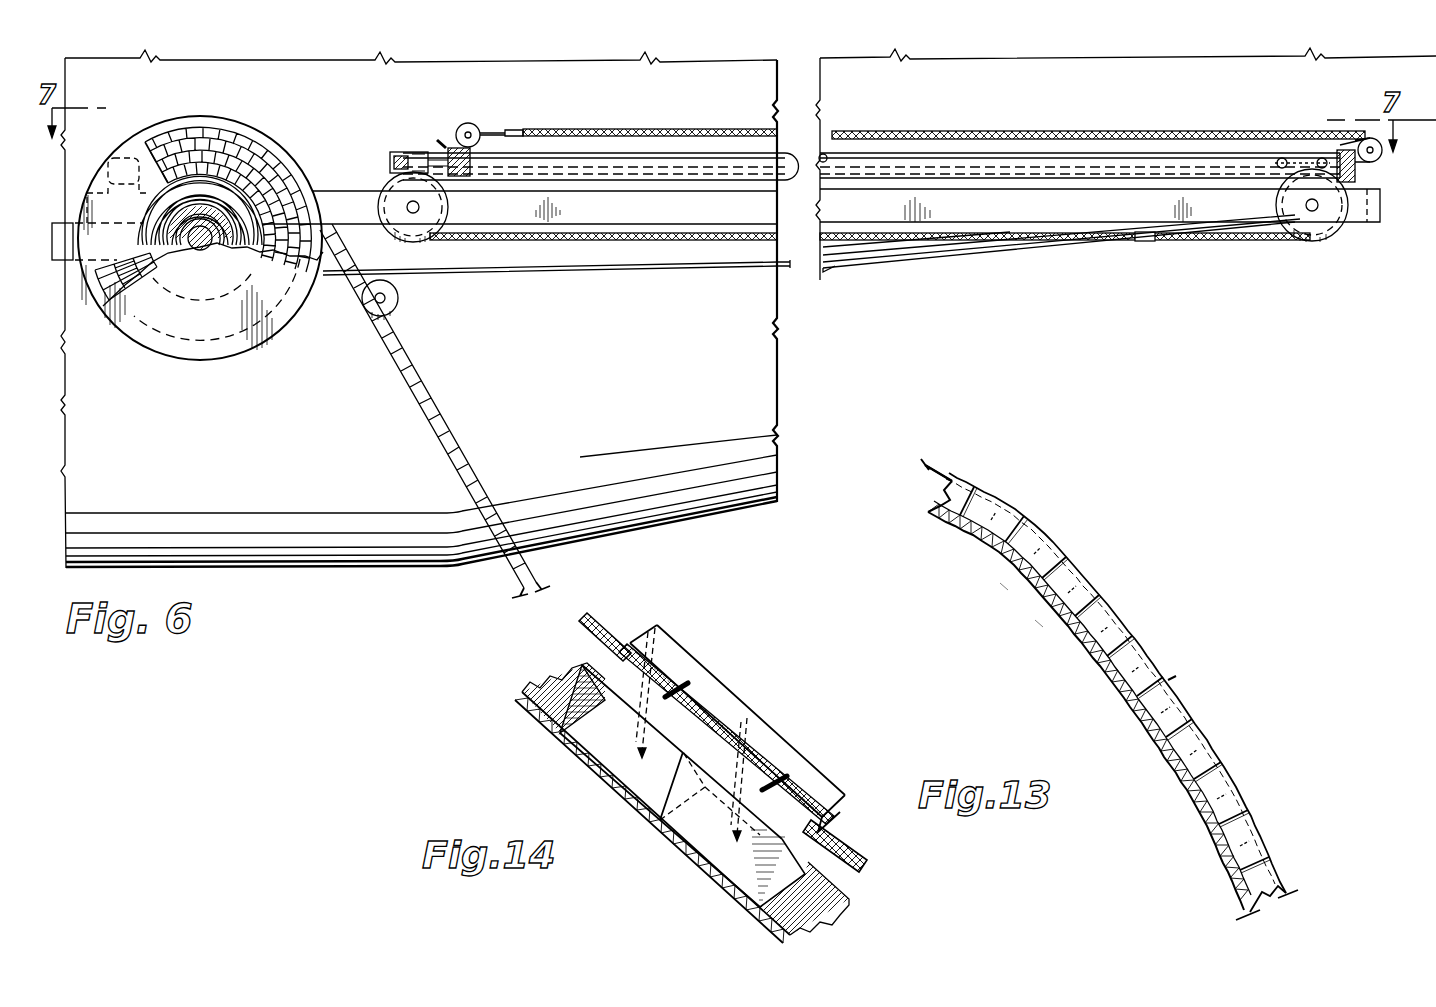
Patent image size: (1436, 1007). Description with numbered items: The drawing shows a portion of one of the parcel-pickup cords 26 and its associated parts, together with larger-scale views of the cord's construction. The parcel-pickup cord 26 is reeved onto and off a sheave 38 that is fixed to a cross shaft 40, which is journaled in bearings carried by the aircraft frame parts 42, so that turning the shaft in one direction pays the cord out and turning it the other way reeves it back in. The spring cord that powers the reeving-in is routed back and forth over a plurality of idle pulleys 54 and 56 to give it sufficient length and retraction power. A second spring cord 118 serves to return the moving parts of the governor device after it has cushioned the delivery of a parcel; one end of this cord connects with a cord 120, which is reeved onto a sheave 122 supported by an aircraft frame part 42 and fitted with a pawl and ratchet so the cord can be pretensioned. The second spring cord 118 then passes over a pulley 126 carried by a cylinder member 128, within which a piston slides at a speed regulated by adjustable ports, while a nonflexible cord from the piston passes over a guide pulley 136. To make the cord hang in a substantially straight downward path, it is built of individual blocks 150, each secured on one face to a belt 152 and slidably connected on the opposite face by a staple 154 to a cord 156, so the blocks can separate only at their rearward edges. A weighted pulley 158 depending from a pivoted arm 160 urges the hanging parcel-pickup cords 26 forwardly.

In FIG. 6, the parcel-pickup cord 26 is at (405, 380).
In FIG. 13, the parcel-pickup cord 26 is at (1162, 652).
In FIG. 14, the parcel-pickup cord 26 is at (818, 715).
In FIG. 6, the sheave 38 is at (222, 360).
In FIG. 6, the cross shaft 40 is at (208, 250).
In FIG. 6, the aircraft frame part 42 is at (66, 295).
In FIG. 6, the idle pulley 54 is at (388, 192).
In FIG. 6, the idle pulley 56 is at (1340, 232).
In FIG. 6, the second spring cord 118 is at (640, 129).
In FIG. 6, the cord 120 is at (513, 130).
In FIG. 6, the sheave 122 is at (480, 127).
In FIG. 6, the pulley 126 is at (1380, 162).
In FIG. 6, the cylinder member 128 is at (688, 152).
In FIG. 6, the guide pulley 136 is at (412, 150).
In FIG. 13, the block 150 is at (1013, 556).
In FIG. 14, the block 150 is at (610, 756).
In FIG. 13, the belt 152 is at (1065, 630).
In FIG. 14, the belt 152 is at (604, 786).
In FIG. 13, the staple 154 is at (1170, 680).
In FIG. 14, the staple 154 is at (692, 682).
In FIG. 13, the cord 156 is at (940, 470).
In FIG. 14, the cord 156 is at (864, 864).
In FIG. 6, the weighted pulley 158 is at (398, 305).
In FIG. 6, the pivoted arm 160 is at (352, 272).